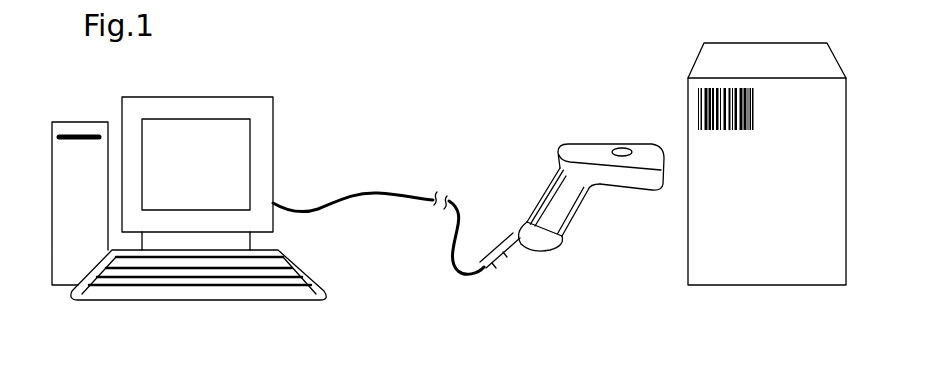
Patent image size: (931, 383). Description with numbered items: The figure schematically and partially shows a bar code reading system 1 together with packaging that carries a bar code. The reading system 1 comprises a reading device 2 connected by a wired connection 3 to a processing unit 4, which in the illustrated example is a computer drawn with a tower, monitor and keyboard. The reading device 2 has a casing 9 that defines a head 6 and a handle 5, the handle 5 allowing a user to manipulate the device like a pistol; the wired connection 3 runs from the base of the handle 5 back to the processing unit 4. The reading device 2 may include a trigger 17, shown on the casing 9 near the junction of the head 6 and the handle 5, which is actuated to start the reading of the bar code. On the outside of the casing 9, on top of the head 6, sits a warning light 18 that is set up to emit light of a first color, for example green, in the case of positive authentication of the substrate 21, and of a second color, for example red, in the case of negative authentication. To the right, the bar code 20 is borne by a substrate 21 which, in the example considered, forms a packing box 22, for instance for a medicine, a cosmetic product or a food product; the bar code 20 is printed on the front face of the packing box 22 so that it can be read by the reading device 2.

The reading system 1 is at (571, 145).
The reading device 2 is at (571, 176).
The wired connection 3 is at (410, 194).
The processing unit 4 is at (232, 82).
The handle 5 is at (546, 200).
The head 6 is at (582, 150).
The casing 9 is at (644, 150).
The trigger 17 is at (598, 186).
The warning light 18 is at (622, 147).
The bar code 20 is at (757, 100).
The substrate 21 is at (751, 194).
The packing box 22 is at (796, 273).